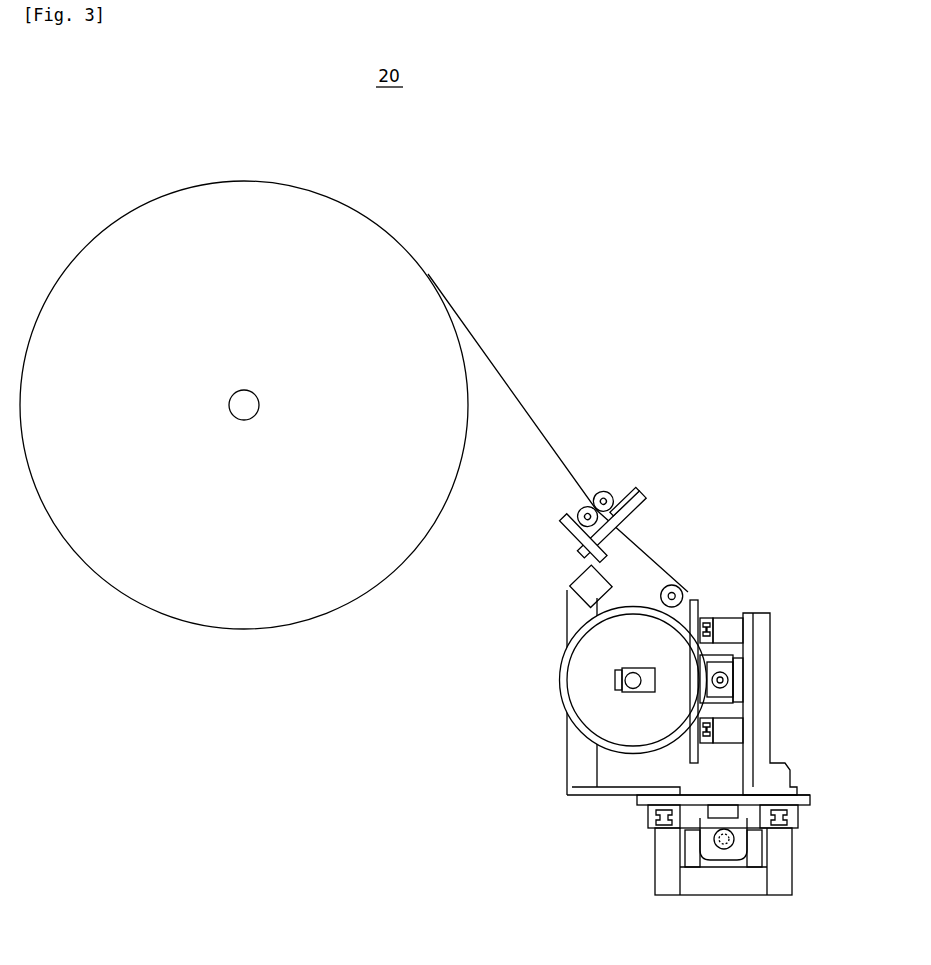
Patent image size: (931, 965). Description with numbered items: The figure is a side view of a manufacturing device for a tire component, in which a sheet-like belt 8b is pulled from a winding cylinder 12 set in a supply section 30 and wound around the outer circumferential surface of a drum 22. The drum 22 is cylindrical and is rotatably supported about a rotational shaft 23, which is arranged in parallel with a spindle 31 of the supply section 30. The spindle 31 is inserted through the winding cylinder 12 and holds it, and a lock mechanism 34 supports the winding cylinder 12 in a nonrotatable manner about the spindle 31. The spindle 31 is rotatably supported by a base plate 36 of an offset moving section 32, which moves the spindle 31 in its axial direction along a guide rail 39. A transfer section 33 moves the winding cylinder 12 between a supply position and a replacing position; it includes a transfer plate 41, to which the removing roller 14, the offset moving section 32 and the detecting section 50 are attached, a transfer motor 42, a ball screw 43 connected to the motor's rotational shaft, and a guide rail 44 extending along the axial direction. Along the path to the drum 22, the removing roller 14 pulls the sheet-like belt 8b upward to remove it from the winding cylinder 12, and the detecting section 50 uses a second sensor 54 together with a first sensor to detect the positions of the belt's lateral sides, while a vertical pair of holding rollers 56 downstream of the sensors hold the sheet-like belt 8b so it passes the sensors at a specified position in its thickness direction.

The drum 22 is at (215, 208).
The rotational shaft 23 is at (258, 404).
The sheet-like belt 8b is at (495, 364).
The detecting section 50 is at (596, 493).
The second sensor 54 is at (624, 508).
The holding rollers 56 is at (578, 514).
The winding cylinder 12 is at (597, 757).
The supply section 30 is at (580, 680).
The lock mechanism 34 is at (648, 672).
The spindle 31 is at (633, 688).
The removing roller 14 is at (677, 586).
The base plate 36 is at (697, 600).
The guide rail 39 is at (708, 618).
The offset moving section 32 is at (735, 604).
The transfer plate 41 is at (805, 793).
The guide rail 44 is at (650, 812).
The transfer section 33 is at (686, 872).
The transfer motor 42 is at (735, 866).
The ball screw 43 is at (740, 838).